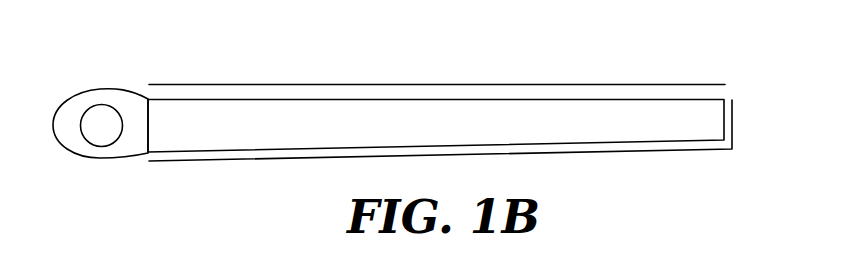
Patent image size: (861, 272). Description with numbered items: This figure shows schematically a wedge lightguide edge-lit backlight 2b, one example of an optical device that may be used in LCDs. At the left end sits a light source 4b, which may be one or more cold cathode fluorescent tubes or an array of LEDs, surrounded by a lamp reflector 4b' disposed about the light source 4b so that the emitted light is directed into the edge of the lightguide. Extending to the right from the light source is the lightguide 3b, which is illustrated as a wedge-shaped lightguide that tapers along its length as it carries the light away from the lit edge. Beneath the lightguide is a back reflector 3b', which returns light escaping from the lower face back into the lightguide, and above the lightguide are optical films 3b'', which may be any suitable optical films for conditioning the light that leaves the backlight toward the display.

The backlight 2b is at (125, 53).
The lightguide 3b is at (436, 87).
The back reflector 3b' is at (440, 154).
The optical films 3b'' is at (437, 53).
The light source 4b is at (69, 149).
The lamp reflector 4b' is at (100, 162).